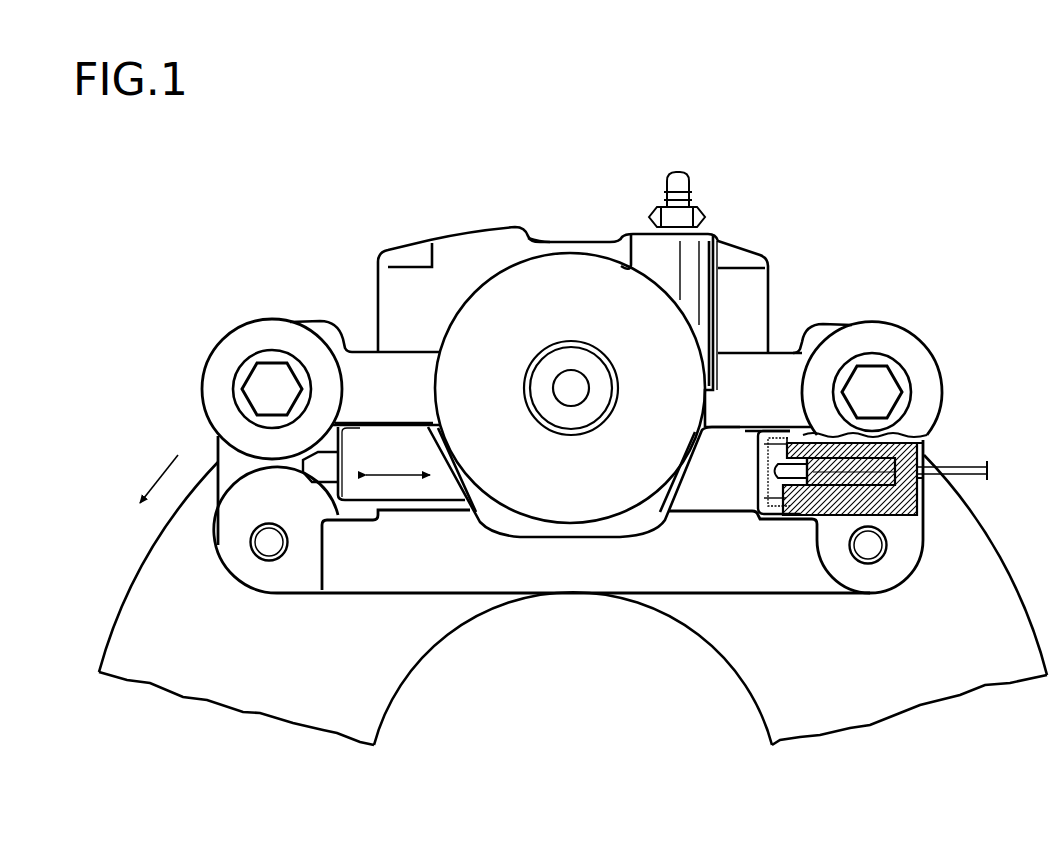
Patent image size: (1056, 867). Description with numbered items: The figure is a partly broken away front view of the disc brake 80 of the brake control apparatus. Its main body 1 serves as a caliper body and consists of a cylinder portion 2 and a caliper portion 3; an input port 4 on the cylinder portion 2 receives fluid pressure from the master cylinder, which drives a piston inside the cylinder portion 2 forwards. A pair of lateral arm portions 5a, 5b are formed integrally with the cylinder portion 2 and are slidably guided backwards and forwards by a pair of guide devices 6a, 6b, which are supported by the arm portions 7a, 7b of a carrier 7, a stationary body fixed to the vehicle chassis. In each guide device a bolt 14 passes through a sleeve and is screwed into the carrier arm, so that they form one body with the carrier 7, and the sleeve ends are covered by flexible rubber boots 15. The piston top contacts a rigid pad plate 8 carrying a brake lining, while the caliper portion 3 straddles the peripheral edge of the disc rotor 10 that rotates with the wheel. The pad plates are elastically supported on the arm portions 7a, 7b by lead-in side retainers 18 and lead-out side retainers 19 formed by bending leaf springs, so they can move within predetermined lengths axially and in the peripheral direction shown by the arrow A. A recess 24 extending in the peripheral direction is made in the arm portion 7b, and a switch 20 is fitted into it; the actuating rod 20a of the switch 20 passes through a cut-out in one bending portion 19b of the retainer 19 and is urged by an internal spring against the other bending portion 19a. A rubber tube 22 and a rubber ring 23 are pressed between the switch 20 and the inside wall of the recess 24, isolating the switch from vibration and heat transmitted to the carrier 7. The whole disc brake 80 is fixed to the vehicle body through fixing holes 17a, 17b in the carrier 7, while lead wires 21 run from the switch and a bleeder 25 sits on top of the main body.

The main body 1 is at (446, 231).
The cylinder portion 2 is at (470, 334).
The caliper portion 3 is at (517, 243).
The input port 4 is at (571, 386).
The lateral arm portion 5a is at (397, 408).
The lateral arm portion 5b is at (735, 372).
The guide device 6a is at (249, 378).
The guide device 6b is at (906, 378).
The carrier 7 is at (488, 555).
The arm portion 7a is at (328, 332).
The arm portion 7b is at (821, 333).
The pad plate 8 is at (692, 492).
The disc rotor 10 is at (160, 577).
The bolt 14 is at (270, 385).
The rubber boot 15 is at (241, 345).
The fixing hole 17a is at (266, 550).
The fixing hole 17b is at (868, 555).
The lead-in side retainer 18 is at (332, 490).
The lead-out side retainer 19 is at (775, 516).
The bending portion 19a is at (768, 461).
The bending portion 19b is at (772, 489).
The switch 20 is at (818, 508).
The actuating rod 20a is at (792, 440).
The lead wires 21 is at (963, 476).
The rubber tube 22 is at (882, 440).
The rubber ring 23 is at (918, 462).
The recess 24 is at (928, 482).
The bleeder 25 is at (692, 200).
The disc brake 80 is at (847, 244).
The peripheral direction arrow A is at (404, 482).